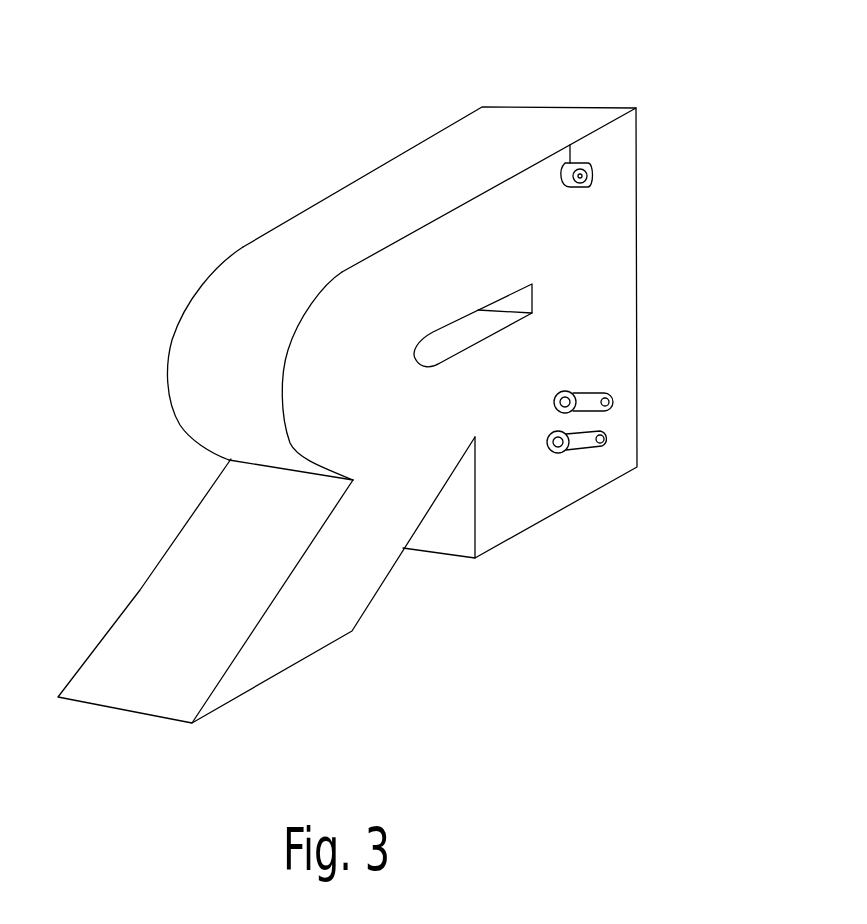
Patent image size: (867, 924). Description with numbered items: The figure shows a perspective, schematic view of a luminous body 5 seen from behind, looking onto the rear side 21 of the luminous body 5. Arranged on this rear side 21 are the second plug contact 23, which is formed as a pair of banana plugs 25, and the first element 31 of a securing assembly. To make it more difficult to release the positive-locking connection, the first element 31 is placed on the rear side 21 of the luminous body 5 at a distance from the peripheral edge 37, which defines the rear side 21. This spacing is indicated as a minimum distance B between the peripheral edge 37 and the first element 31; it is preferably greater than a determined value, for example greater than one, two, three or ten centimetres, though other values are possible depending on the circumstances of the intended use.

The luminous body 5 is at (397, 361).
The rear side 21 is at (622, 323).
The peripheral edge 37 is at (445, 213).
The first element 31 is at (577, 207).
The minimum distance B is at (587, 160).
The second plug contact 23 is at (535, 422).
The banana plugs 25 is at (591, 418).